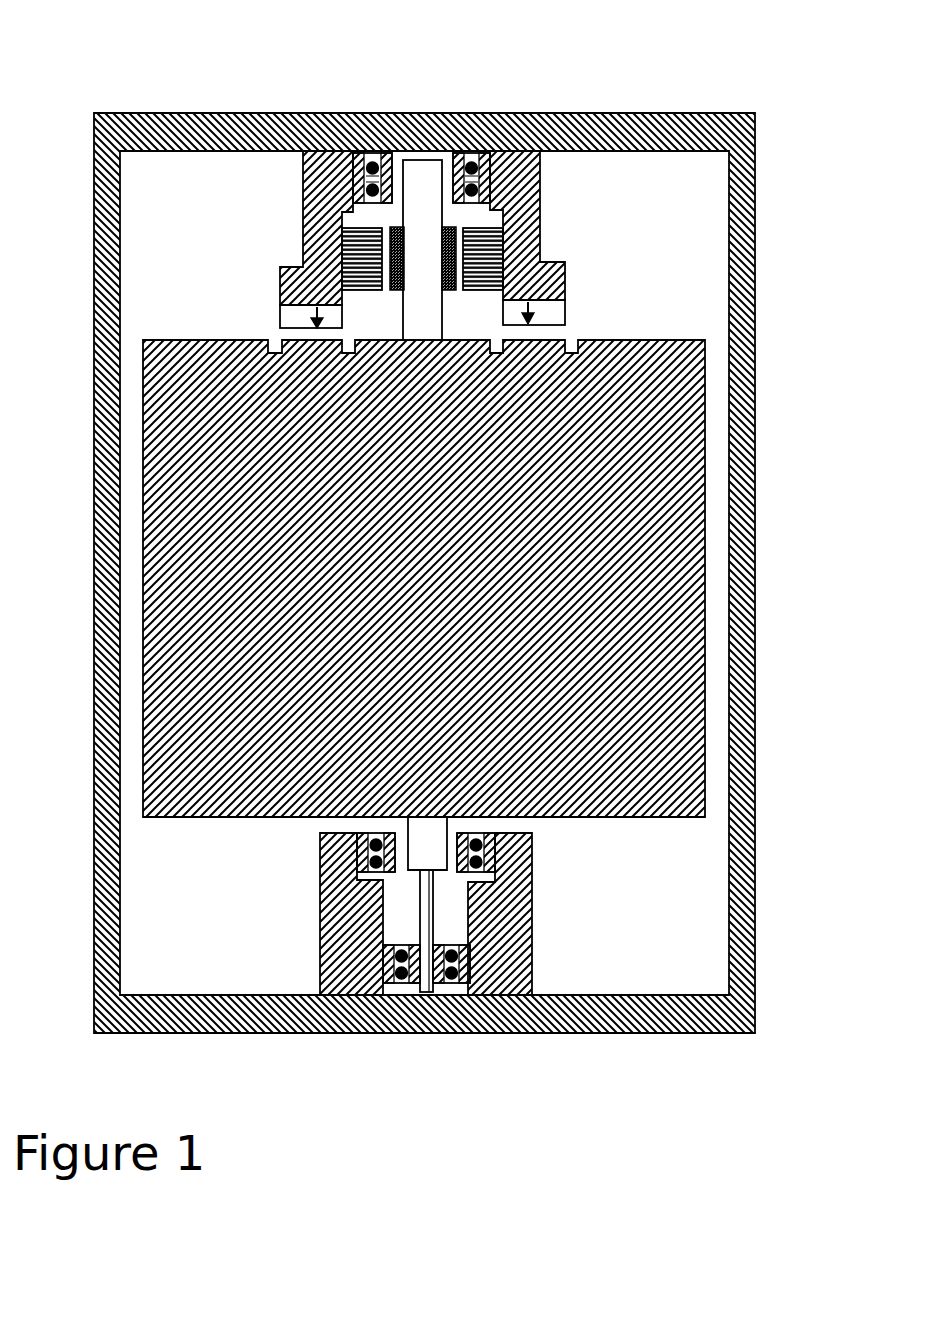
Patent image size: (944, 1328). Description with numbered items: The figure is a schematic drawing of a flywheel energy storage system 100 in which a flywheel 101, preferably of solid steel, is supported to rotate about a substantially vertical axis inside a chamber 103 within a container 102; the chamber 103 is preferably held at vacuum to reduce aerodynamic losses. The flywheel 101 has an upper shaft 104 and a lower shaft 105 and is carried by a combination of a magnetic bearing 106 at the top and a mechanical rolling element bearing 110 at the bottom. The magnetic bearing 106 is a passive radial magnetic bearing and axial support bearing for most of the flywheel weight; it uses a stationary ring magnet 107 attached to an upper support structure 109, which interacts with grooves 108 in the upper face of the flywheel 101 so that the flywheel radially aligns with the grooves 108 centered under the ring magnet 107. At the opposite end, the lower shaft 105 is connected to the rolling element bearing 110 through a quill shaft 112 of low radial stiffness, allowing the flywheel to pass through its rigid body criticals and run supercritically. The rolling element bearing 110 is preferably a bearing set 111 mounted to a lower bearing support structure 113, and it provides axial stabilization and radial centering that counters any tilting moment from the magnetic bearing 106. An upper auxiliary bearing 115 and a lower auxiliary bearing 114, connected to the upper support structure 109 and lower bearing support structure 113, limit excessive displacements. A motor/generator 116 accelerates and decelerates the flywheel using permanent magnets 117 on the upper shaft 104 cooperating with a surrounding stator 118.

The flywheel system 100 is at (107, 52).
The flywheel 101 is at (705, 617).
The container 102 is at (758, 717).
The chamber 103 is at (707, 870).
The upper shaft 104 is at (432, 163).
The lower shaft 105 is at (453, 830).
The magnetic bearing 106 is at (577, 323).
The stationary ring magnet 107 is at (280, 320).
The grooves 108 is at (347, 353).
The upper support structure 109 is at (540, 193).
The rolling element bearing 110 is at (442, 937).
The bearing set 111 is at (440, 983).
The quill shaft 112 is at (420, 920).
The lower bearing support structure 113 is at (533, 960).
The lower auxiliary bearing 114 is at (487, 873).
The upper auxiliary bearing 115 is at (385, 160).
The motor/generator 116 is at (387, 312).
The permanent magnets 117 is at (443, 290).
The stator 118 is at (487, 292).